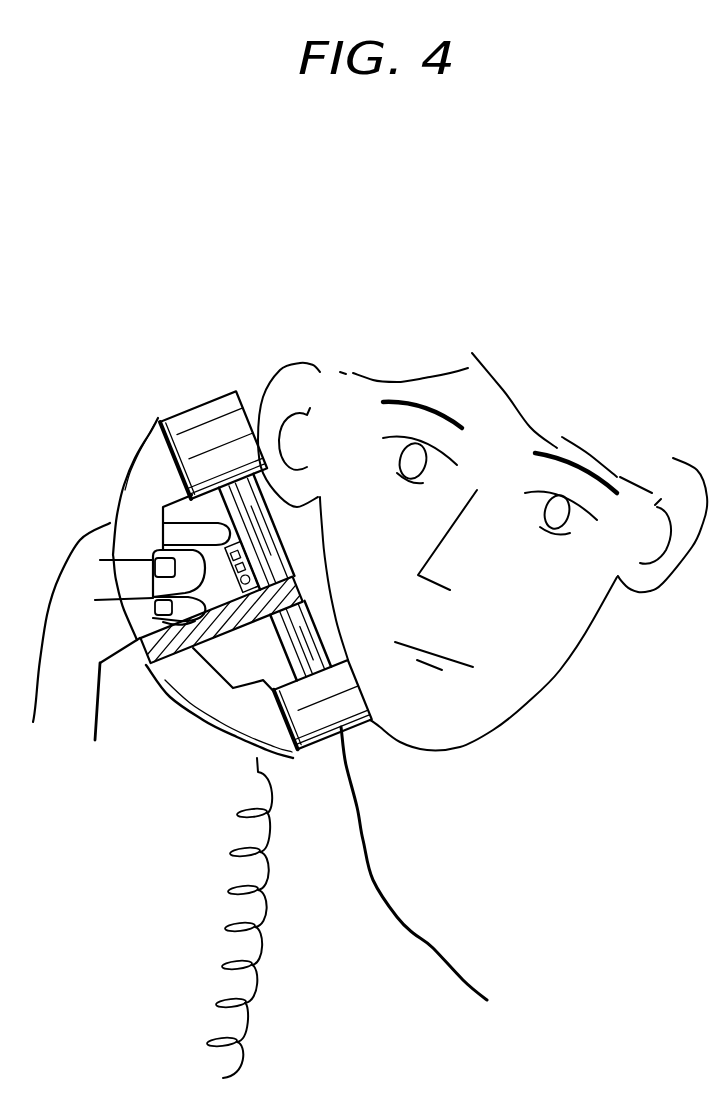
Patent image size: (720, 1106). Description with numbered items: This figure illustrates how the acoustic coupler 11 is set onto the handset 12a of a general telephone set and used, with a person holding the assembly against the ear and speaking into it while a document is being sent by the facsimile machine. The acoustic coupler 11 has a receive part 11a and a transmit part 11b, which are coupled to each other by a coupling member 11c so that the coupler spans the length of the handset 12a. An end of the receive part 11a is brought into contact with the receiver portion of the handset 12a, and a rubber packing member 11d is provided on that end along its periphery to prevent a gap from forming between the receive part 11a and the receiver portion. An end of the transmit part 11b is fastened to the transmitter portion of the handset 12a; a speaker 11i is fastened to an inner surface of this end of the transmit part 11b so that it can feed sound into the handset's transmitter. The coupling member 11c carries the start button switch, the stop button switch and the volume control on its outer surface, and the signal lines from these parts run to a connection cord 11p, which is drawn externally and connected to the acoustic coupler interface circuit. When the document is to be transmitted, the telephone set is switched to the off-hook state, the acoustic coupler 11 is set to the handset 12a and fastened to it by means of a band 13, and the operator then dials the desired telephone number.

The acoustic coupler 11 is at (241, 512).
The receive part 11a is at (213, 445).
The transmit part 11b is at (323, 704).
The coupling member 11c is at (236, 593).
The rubber packing member 11d is at (175, 460).
The speaker 11i is at (332, 727).
The connection cord 11p is at (433, 948).
The handset 12a is at (128, 470).
The band 13 is at (143, 668).